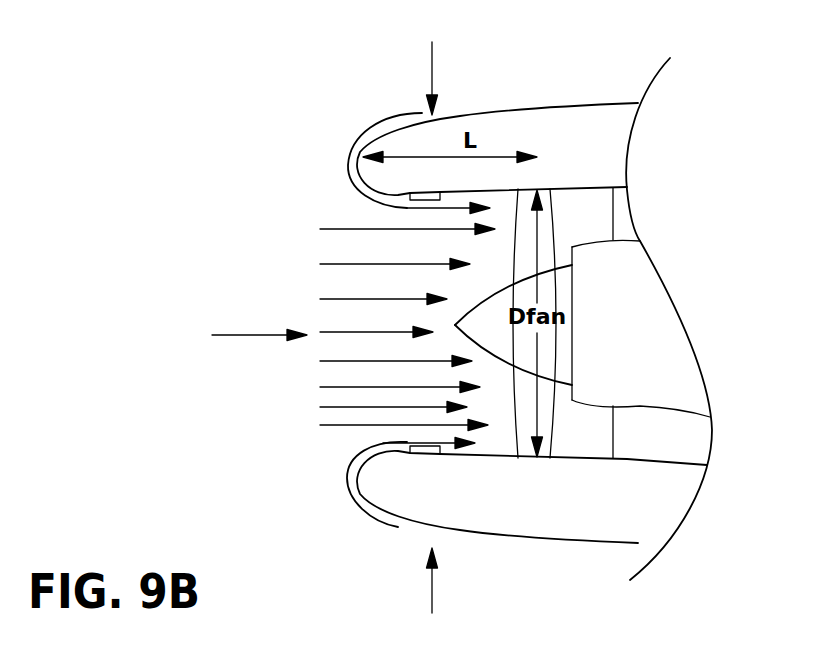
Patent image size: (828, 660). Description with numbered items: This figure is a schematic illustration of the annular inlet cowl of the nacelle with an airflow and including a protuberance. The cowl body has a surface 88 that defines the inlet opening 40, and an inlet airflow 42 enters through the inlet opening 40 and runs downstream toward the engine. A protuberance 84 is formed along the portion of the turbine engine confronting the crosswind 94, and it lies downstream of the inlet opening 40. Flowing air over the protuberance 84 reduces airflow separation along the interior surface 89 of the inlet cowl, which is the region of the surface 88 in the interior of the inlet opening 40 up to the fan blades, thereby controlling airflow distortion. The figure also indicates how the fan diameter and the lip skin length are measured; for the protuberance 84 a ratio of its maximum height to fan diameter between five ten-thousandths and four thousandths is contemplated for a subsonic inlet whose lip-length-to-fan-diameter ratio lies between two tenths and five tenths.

The inlet opening 40 is at (244, 335).
The inlet airflow 42 is at (337, 299).
The protuberance 84 is at (427, 195).
The surface 88 is at (385, 203).
The interior surface 89 is at (473, 187).
The crosswind 94 is at (430, 70).